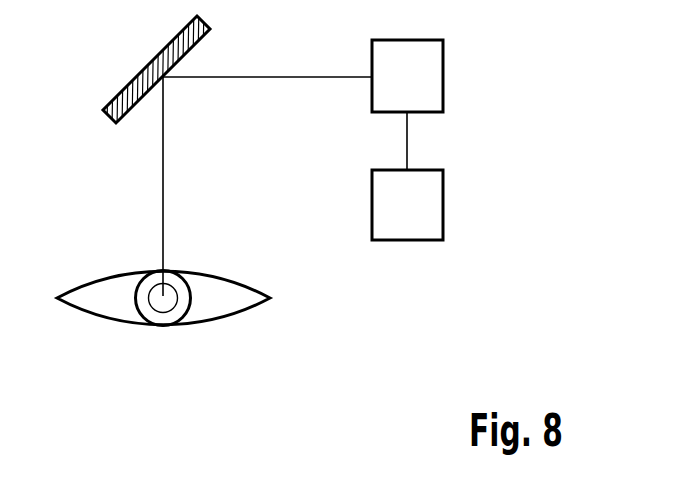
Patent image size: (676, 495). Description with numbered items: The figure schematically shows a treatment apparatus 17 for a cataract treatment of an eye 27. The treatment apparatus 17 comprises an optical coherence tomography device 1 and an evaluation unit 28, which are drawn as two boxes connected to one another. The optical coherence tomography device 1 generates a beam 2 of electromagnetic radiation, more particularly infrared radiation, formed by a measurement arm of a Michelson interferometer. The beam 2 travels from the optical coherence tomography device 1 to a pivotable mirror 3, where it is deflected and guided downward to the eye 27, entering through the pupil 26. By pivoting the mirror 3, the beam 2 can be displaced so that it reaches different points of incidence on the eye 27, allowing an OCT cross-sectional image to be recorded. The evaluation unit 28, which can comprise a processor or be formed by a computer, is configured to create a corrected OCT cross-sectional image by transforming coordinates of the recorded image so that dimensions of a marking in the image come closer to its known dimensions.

The optical coherence tomography device 1 is at (465, 76).
The beam 2 is at (299, 76).
The pivotable mirror 3 is at (136, 78).
The treatment apparatus 17 is at (438, 310).
The pupil 26 is at (177, 293).
The eye 27 is at (243, 318).
The evaluation unit 28 is at (444, 202).